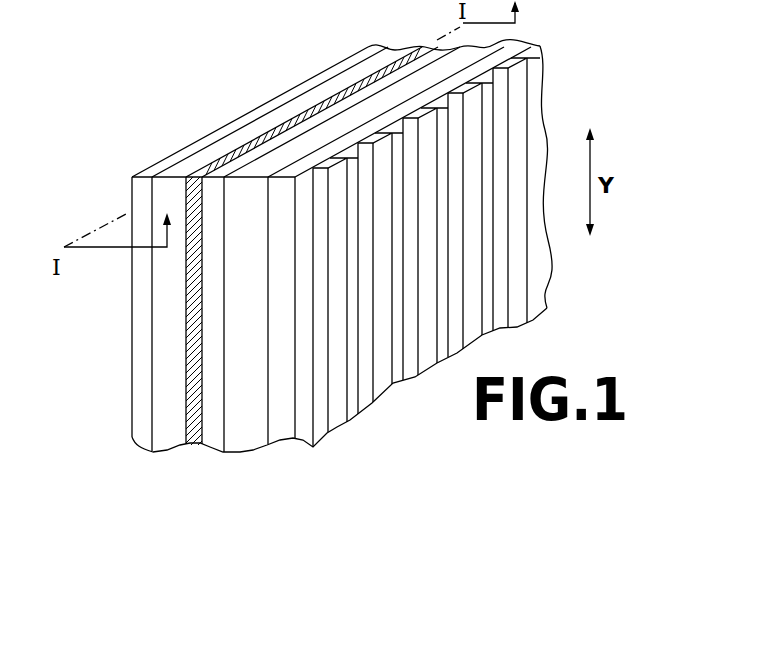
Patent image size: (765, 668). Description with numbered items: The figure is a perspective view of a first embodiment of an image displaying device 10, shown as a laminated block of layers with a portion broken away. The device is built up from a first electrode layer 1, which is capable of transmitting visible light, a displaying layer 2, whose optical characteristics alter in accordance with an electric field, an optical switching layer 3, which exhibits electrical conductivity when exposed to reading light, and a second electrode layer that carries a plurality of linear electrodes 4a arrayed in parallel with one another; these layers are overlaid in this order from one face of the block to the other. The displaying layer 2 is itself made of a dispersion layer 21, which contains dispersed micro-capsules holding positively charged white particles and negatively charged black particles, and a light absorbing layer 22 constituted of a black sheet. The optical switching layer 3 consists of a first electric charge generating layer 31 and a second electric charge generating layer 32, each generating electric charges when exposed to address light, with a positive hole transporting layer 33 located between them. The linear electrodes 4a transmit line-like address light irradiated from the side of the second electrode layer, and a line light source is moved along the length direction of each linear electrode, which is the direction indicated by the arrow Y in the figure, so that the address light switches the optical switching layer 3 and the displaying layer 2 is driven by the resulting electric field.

The image displaying device 10 is at (181, 130).
The first electrode layer 1 is at (138, 436).
The displaying layer 2 is at (192, 517).
The dispersion layer 21 is at (168, 443).
The light absorbing layer 22 is at (196, 443).
The optical switching layer 3 is at (345, 517).
The first electric charge generating layer 31 is at (216, 437).
The positive hole transporting layer 33 is at (247, 440).
The second electric charge generating layer 32 is at (281, 438).
The linear electrodes 4a is at (339, 413).